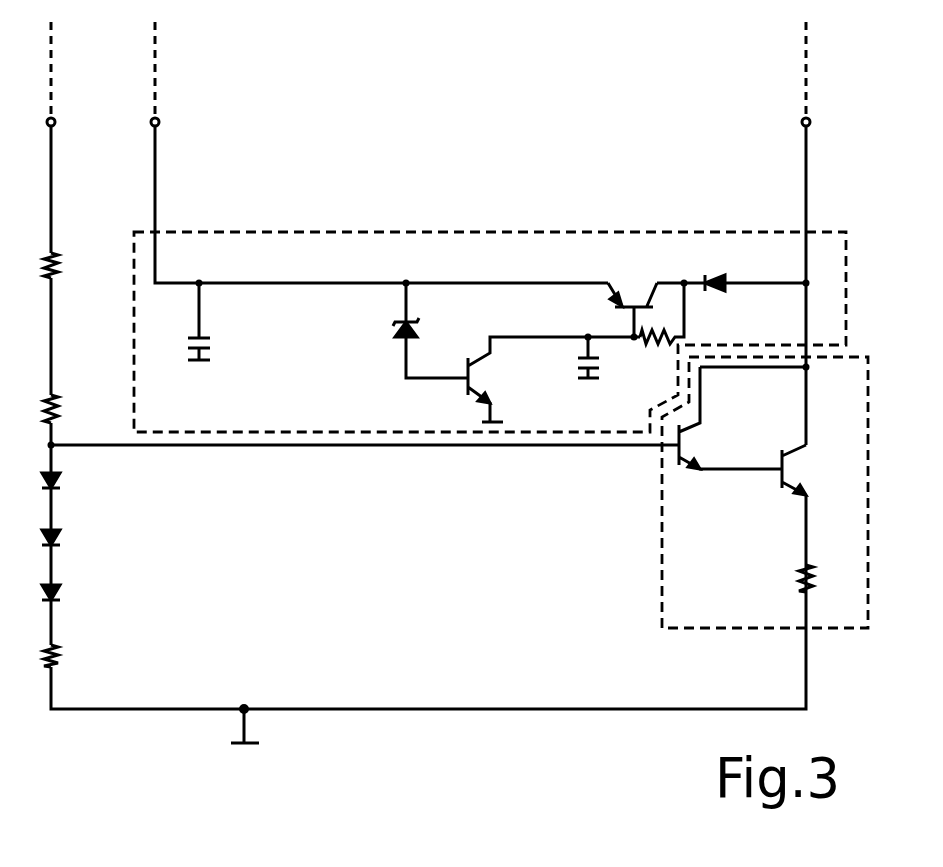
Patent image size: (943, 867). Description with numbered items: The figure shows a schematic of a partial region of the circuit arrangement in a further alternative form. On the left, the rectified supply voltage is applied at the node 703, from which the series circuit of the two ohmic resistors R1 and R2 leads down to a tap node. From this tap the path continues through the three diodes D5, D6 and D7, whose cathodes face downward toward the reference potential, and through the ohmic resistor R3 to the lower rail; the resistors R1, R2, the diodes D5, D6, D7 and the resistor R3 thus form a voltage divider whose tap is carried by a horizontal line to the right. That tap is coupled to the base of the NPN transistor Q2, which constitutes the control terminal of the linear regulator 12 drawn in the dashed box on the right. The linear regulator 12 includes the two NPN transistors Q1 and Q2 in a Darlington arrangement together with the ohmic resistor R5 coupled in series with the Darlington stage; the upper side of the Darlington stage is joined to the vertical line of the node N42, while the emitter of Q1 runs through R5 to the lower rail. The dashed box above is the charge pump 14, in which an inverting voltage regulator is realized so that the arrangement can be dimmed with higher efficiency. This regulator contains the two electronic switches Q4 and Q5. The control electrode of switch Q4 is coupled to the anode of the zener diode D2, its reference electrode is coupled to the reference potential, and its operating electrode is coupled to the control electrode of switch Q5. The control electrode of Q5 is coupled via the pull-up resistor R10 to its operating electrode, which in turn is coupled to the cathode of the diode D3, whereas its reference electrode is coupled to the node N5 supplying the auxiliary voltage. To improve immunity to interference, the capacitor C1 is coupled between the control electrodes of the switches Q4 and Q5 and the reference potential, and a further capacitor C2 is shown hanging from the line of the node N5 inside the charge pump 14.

The node 703 is at (74, 78).
The node N5 is at (172, 78).
The node N42 is at (827, 78).
The ohmic resistor R1 is at (67, 265).
The ohmic resistor R2 is at (67, 409).
The ohmic resistor R3 is at (67, 656).
The ohmic resistor R5 is at (820, 578).
The pull-up resistor R10 is at (684, 313).
The zener diode D2 is at (430, 330).
The diode D3 is at (715, 269).
The diode D5 is at (68, 481).
The diode D6 is at (68, 537).
The diode D7 is at (68, 592).
The capacitor C1 is at (601, 357).
The capacitor C2 is at (210, 321).
The NPN transistor Q1 is at (803, 470).
The NPN transistor Q2 is at (730, 418).
The electronic switch Q4 is at (528, 379).
The electronic switch Q5 is at (622, 304).
The linear regulator 12 is at (662, 520).
The charge pump 14 is at (847, 291).